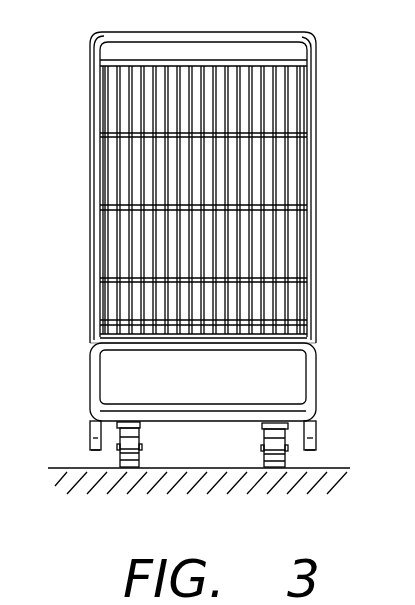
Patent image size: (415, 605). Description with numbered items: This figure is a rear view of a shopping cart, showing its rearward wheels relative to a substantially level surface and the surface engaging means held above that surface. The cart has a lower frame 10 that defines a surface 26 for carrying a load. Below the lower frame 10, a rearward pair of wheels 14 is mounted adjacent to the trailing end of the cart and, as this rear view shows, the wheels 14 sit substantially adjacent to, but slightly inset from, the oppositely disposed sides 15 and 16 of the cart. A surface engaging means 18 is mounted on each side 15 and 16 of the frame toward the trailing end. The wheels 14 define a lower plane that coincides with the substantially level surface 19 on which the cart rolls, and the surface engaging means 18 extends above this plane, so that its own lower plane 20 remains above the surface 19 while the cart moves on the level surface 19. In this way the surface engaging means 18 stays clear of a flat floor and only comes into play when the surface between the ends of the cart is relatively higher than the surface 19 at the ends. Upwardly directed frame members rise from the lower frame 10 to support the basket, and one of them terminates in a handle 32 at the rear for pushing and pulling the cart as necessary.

The lower frame 10 is at (218, 425).
The rearward pair of wheels 14 is at (142, 458).
The side 15 is at (92, 393).
The side 16 is at (318, 393).
The surface engaging means 18 is at (90, 437).
The substantially level surface 19 is at (343, 470).
The lower plane of the surface engaging means 20 is at (98, 458).
The surface for carrying a load 26 is at (197, 403).
The handle 32 is at (257, 32).